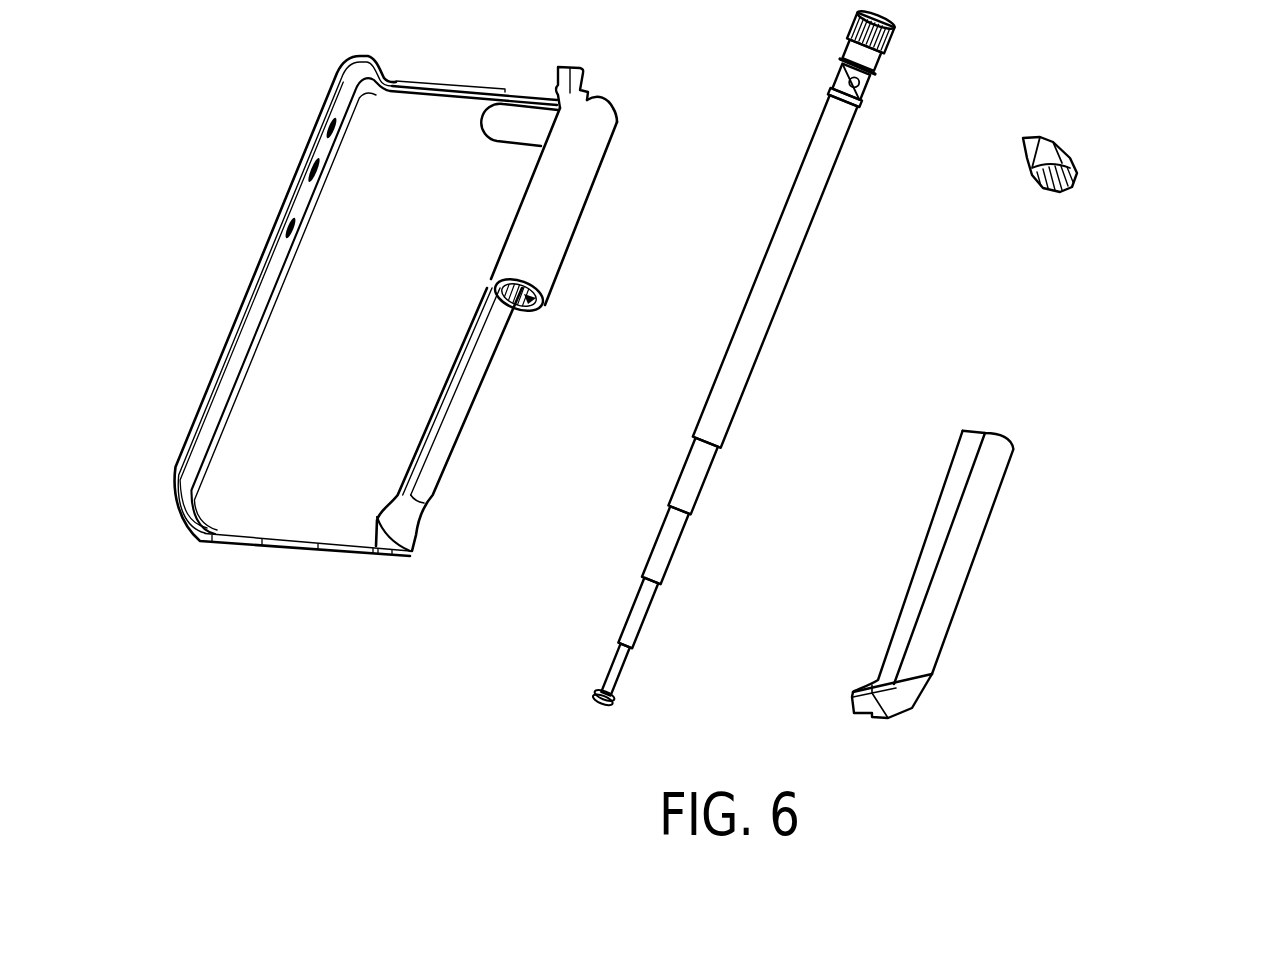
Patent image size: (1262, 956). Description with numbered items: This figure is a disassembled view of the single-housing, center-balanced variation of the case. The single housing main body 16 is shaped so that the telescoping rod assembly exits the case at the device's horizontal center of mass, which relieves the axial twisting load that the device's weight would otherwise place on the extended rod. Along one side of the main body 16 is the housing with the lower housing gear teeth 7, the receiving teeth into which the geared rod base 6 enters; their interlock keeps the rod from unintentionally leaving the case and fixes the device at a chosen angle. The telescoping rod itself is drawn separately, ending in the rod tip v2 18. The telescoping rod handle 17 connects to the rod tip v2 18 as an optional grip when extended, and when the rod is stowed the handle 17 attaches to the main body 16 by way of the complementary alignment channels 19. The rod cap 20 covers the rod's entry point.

The geared rod base 6 is at (905, 59).
The housing gear teeth 7 is at (528, 312).
The single housing main body 16 is at (350, 572).
The telescoping rod handle 17 is at (1010, 566).
The rod tip v2 18 is at (640, 710).
The alignment channels 19 is at (430, 482).
The rod cap 20 is at (1103, 180).